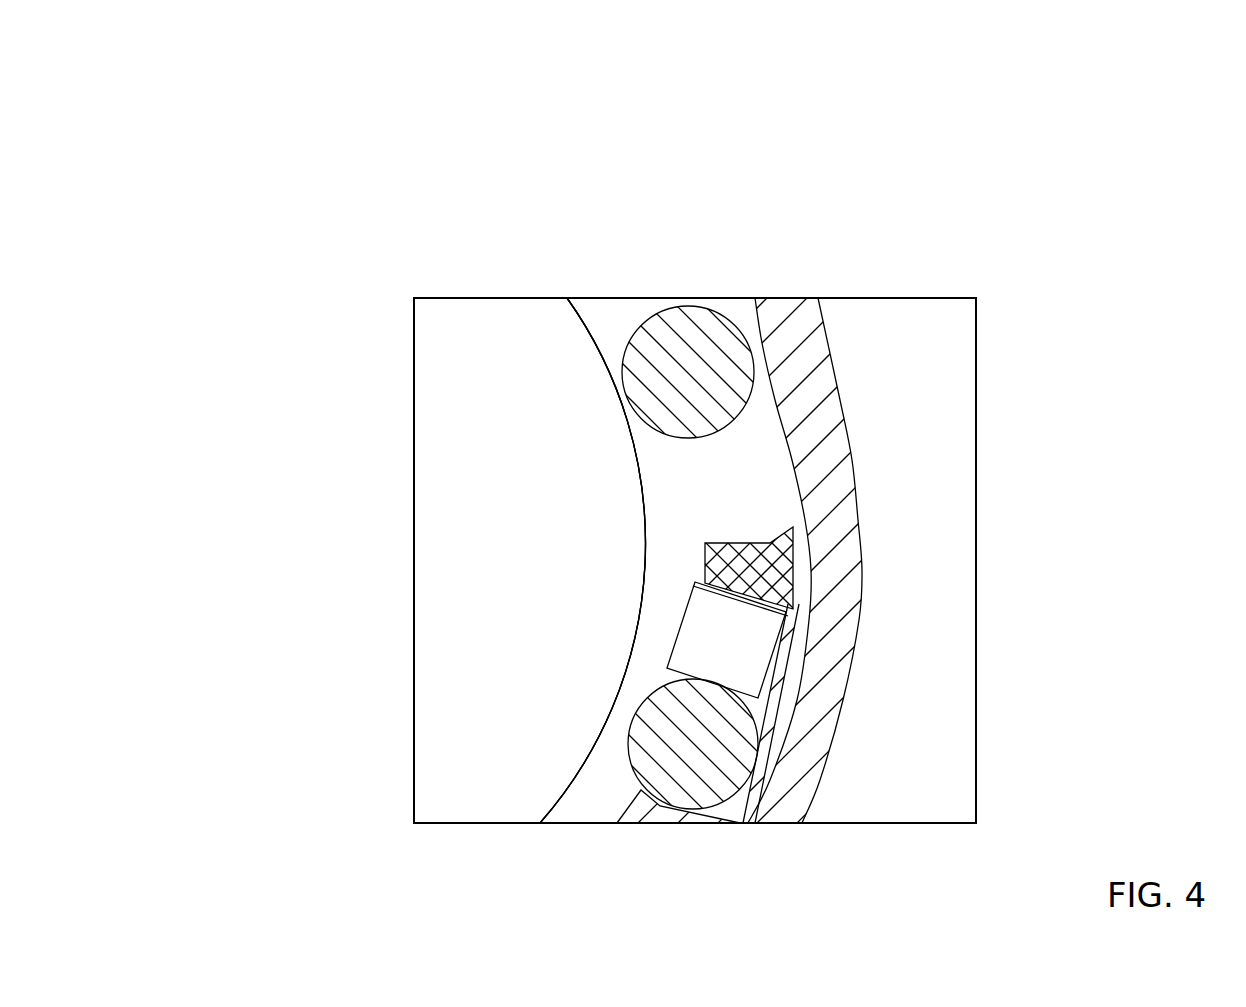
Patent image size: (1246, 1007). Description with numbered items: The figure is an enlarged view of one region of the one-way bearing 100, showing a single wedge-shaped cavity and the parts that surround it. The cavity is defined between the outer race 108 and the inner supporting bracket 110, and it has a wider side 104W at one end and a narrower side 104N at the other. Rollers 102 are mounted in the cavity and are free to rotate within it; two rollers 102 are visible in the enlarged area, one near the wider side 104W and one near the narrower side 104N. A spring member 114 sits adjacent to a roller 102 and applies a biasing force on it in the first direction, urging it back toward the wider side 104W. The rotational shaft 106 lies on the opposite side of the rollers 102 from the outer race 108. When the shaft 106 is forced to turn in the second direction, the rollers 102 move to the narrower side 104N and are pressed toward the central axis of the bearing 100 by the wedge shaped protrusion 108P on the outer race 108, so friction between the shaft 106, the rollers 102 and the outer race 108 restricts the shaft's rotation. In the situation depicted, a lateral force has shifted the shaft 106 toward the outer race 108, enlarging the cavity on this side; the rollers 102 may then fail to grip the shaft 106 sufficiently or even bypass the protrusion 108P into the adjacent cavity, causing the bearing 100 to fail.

The one-way bearing 100 is at (1031, 145).
The rollers 102 is at (700, 340).
The wider side 104W is at (660, 450).
The narrower side 104N is at (660, 650).
The rotational shaft 106 is at (535, 455).
The outer race 108 is at (840, 512).
The wedge shaped protrusion 108P is at (793, 661).
The inner supporting bracket 110 is at (775, 582).
The spring member 114 is at (745, 657).